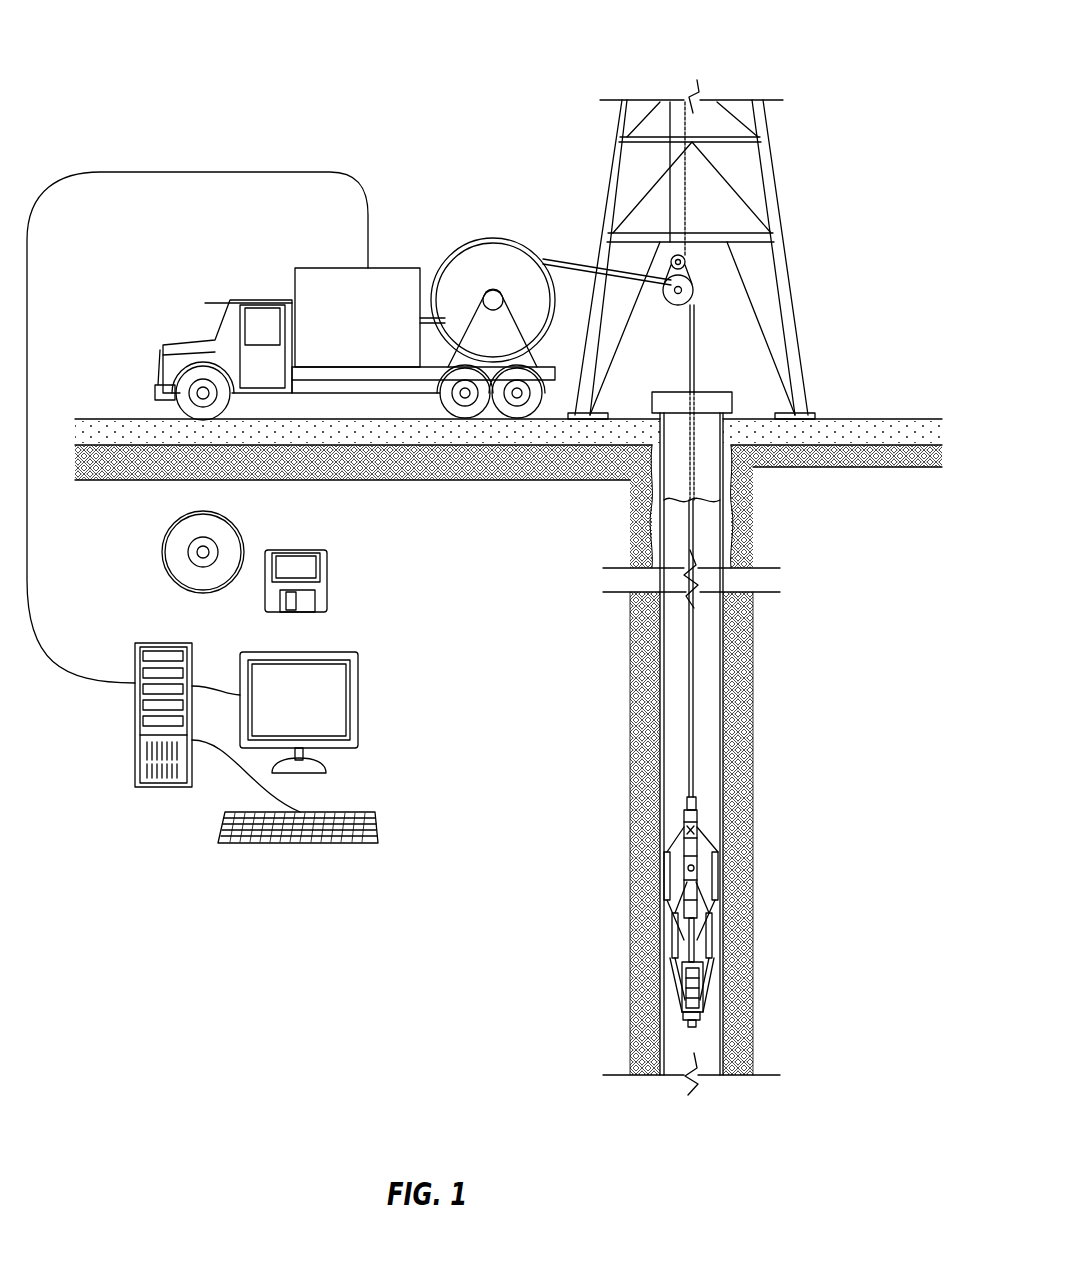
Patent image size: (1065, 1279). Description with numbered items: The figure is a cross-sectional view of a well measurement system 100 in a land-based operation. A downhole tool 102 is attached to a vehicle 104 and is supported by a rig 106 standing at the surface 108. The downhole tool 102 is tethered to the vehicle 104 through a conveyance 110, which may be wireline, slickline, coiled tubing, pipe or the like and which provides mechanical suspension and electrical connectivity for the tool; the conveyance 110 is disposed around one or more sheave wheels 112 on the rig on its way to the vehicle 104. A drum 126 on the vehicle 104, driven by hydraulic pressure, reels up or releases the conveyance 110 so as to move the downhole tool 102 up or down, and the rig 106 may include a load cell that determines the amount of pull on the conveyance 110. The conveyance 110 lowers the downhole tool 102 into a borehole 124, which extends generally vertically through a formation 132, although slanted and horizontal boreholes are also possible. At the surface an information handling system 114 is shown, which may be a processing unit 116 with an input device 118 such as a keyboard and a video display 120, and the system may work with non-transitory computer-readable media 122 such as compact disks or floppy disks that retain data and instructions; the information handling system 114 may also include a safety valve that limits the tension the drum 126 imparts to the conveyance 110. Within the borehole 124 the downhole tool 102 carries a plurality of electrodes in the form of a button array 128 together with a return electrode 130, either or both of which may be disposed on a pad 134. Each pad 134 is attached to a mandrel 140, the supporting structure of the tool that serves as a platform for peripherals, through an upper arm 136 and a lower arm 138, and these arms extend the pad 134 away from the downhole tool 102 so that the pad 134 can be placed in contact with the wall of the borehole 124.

The well measurement system 100 is at (203, 54).
The downhole tool 102 is at (650, 875).
The vehicle 104 is at (313, 267).
The rig 106 is at (776, 162).
The surface 108 is at (865, 418).
The conveyance 110 is at (688, 665).
The sheave wheel 112 is at (675, 308).
The information handling system 114 is at (177, 858).
The processing unit 116 is at (165, 643).
The input device 118 is at (378, 825).
The video display 120 is at (358, 695).
The non-transitory computer-readable media 122 is at (242, 540).
The borehole 124 is at (713, 543).
The drum 126 is at (481, 238).
The button array 128 is at (710, 938).
The return electrode 130 is at (712, 953).
The formation 132 is at (892, 667).
The pad 134 is at (735, 865).
The upper arm 136 is at (715, 905).
The lower arm 138 is at (672, 978).
The mandrel 140 is at (685, 932).